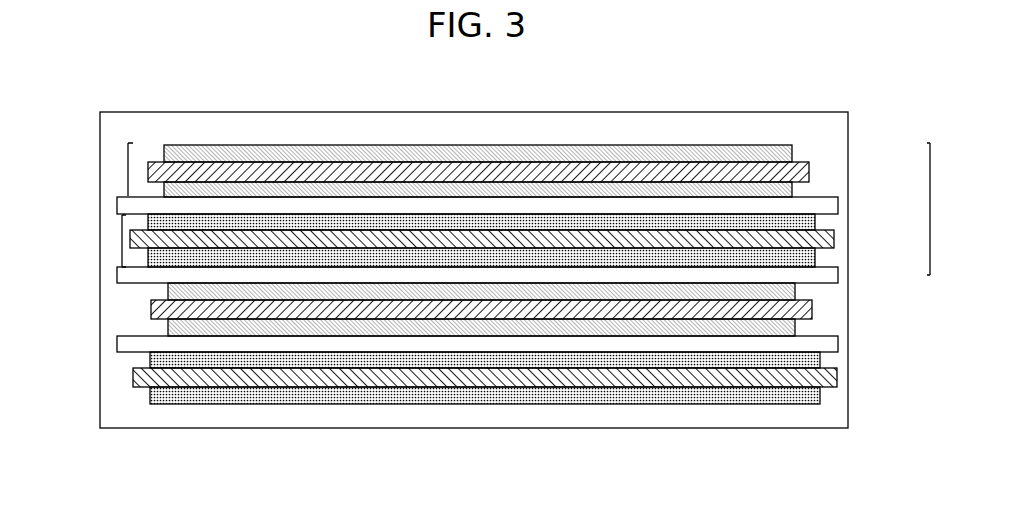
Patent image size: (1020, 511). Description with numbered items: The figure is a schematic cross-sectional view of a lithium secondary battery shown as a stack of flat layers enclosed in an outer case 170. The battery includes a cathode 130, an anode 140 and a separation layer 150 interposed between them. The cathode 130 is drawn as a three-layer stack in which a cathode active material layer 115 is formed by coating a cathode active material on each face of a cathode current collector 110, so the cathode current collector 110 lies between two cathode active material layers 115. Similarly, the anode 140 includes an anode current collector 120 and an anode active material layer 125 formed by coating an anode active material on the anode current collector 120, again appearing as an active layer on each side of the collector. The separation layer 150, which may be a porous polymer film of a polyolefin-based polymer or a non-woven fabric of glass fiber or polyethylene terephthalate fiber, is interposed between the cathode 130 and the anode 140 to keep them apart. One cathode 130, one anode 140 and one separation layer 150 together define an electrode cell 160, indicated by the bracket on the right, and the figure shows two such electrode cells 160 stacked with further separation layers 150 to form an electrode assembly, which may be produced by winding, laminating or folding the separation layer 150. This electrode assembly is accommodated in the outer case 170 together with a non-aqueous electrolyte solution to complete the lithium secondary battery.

The cathode current collector 110 is at (809, 172).
The cathode active material layer 115 is at (792, 150).
The anode current collector 120 is at (834, 240).
The anode active material layer 125 is at (815, 222).
The cathode 130 is at (128, 161).
The anode 140 is at (122, 254).
The separation layer 150 is at (117, 209).
The electrode cell 160 is at (930, 212).
The outer case 170 is at (230, 428).